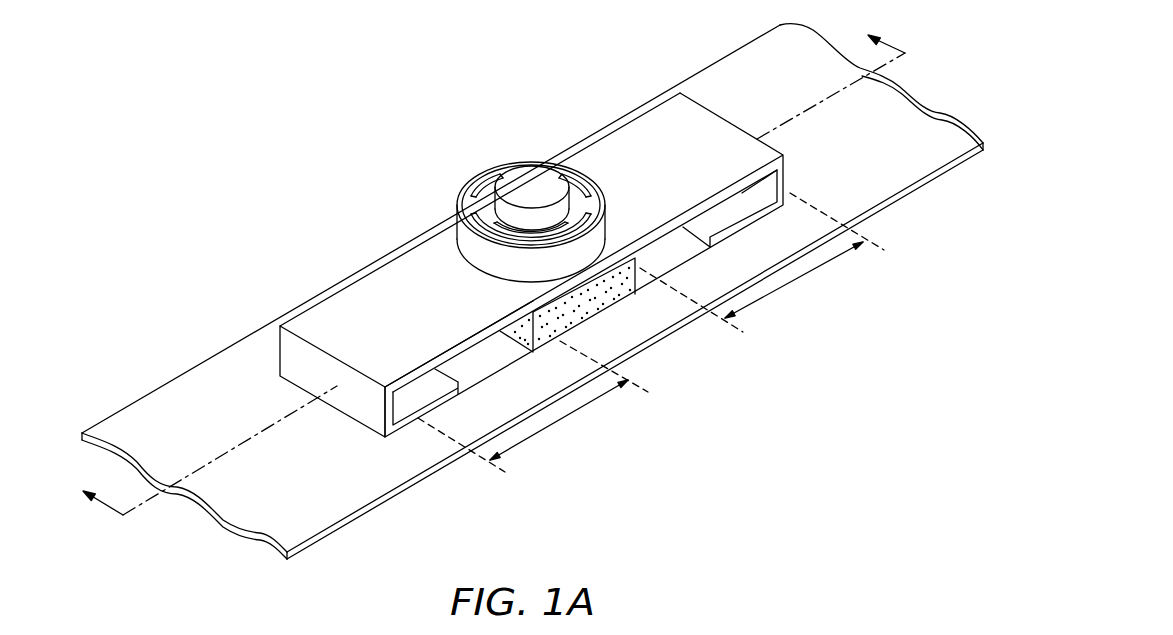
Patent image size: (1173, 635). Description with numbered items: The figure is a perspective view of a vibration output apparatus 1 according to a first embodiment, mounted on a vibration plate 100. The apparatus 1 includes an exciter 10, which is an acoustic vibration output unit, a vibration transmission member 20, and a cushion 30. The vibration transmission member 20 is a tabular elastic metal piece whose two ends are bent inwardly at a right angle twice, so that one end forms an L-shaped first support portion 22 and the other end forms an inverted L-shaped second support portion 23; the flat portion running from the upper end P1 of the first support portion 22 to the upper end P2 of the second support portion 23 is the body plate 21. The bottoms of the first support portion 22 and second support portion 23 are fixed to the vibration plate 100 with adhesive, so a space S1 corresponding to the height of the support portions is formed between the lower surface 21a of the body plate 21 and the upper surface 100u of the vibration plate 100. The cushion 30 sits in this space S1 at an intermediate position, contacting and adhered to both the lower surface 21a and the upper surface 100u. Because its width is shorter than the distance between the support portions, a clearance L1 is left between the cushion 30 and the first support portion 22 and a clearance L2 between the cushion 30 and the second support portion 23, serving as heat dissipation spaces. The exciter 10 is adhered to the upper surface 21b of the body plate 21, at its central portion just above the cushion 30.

The vibration output apparatus 1 is at (523, 285).
The exciter 10 is at (480, 152).
The vibration transmission member 20 is at (571, 258).
The body plate 21 is at (655, 125).
The lower surface of the body plate 21a is at (471, 328).
The upper surface of the body plate 21b is at (388, 285).
The first support portion 22 is at (368, 408).
The second support portion 23 is at (781, 183).
The cushion 30 is at (577, 305).
The vibration plate 100 is at (523, 285).
The upper surface of the vibration plate 100u is at (478, 390).
The upper end of the first support portion P1 is at (332, 355).
The upper end of the second support portion P2 is at (740, 118).
The space S1 is at (691, 262).
The clearance L1 is at (569, 400).
The clearance L2 is at (762, 262).